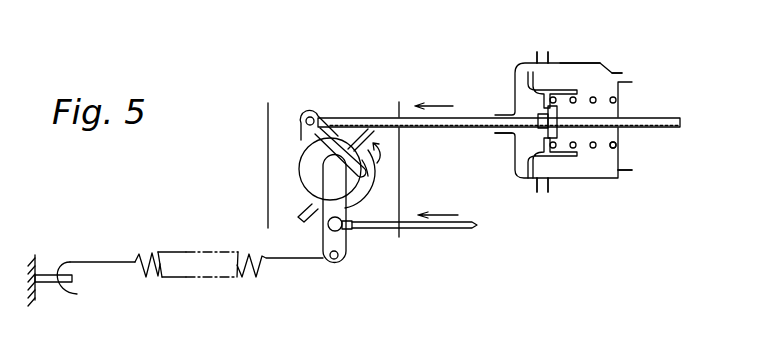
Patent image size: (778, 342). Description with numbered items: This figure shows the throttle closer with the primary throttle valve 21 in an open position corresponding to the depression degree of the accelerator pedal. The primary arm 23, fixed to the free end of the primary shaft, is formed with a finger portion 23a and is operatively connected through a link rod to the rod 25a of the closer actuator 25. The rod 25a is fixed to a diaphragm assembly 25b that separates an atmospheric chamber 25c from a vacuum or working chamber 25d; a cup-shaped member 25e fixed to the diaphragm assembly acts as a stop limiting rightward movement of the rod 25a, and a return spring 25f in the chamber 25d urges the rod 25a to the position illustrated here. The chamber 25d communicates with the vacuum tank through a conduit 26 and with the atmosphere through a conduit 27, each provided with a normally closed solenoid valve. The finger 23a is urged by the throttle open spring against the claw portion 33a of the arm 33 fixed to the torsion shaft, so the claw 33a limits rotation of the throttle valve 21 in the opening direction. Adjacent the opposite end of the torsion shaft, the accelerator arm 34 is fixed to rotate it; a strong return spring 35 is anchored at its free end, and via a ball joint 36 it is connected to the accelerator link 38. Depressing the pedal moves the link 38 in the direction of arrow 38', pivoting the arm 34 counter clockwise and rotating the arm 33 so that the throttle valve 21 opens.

The throttle valve 21 is at (296, 218).
The primary arm 23 is at (357, 201).
The finger portion 23a is at (370, 175).
The closer actuator 25 is at (584, 43).
The rod 25a is at (475, 114).
The diaphragm assembly 25b is at (533, 62).
The atmospheric chamber 25c is at (486, 150).
The vacuum chamber 25d is at (600, 66).
The cup-shaped member 25e is at (571, 179).
The return spring 25f is at (616, 146).
The conduit 26 is at (622, 73).
The conduit 27 is at (632, 171).
The arm 33 is at (315, 162).
The claw portion 33a is at (348, 141).
The accelerator arm 34 is at (340, 262).
The return spring 35 is at (223, 252).
The ball joint 36 is at (340, 231).
The accelerator link 38 is at (414, 251).
The arrow 38' is at (456, 203).